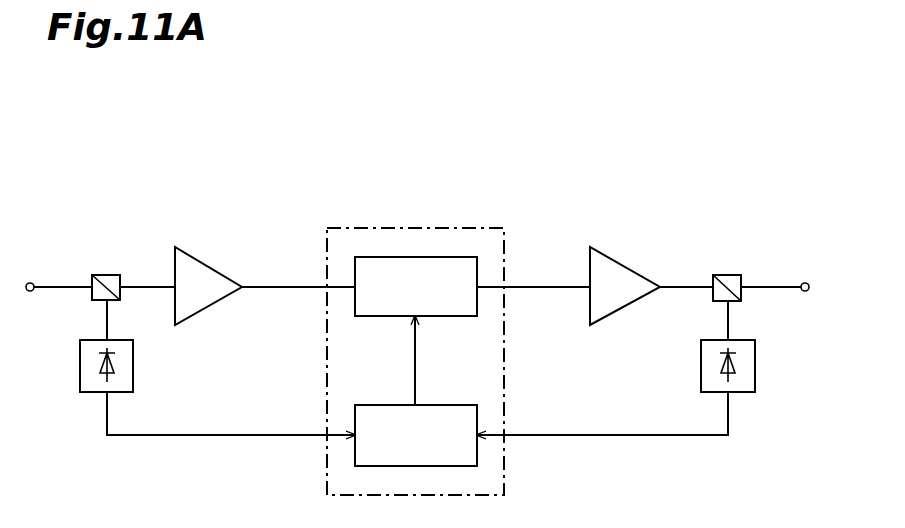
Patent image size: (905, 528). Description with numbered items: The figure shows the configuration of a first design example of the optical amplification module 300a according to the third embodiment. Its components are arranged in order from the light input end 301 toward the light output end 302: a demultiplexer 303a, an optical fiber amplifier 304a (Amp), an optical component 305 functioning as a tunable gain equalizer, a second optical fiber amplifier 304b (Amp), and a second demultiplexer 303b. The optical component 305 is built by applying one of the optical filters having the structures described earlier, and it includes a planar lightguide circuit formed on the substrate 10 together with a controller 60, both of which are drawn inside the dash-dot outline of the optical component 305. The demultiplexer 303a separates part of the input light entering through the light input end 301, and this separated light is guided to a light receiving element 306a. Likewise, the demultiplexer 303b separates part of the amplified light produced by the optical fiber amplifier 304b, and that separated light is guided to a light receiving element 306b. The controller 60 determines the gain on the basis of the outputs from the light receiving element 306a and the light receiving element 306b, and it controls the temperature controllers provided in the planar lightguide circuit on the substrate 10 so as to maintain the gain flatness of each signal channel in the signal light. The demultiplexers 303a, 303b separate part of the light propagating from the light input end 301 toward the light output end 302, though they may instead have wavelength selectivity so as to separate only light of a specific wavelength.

The optical amplification module 300a is at (563, 197).
The light input end 301 is at (30, 283).
The light output end 302 is at (805, 282).
The demultiplexer 303a is at (108, 273).
The demultiplexer 303b is at (728, 274).
The optical fiber amplifier 304a is at (204, 263).
The optical fiber amplifier 304b is at (647, 278).
The optical component 305 is at (388, 226).
The substrate 10 is at (355, 268).
The controller 60 is at (388, 405).
The light receiving element 306a is at (133, 372).
The light receiving element 306b is at (755, 372).